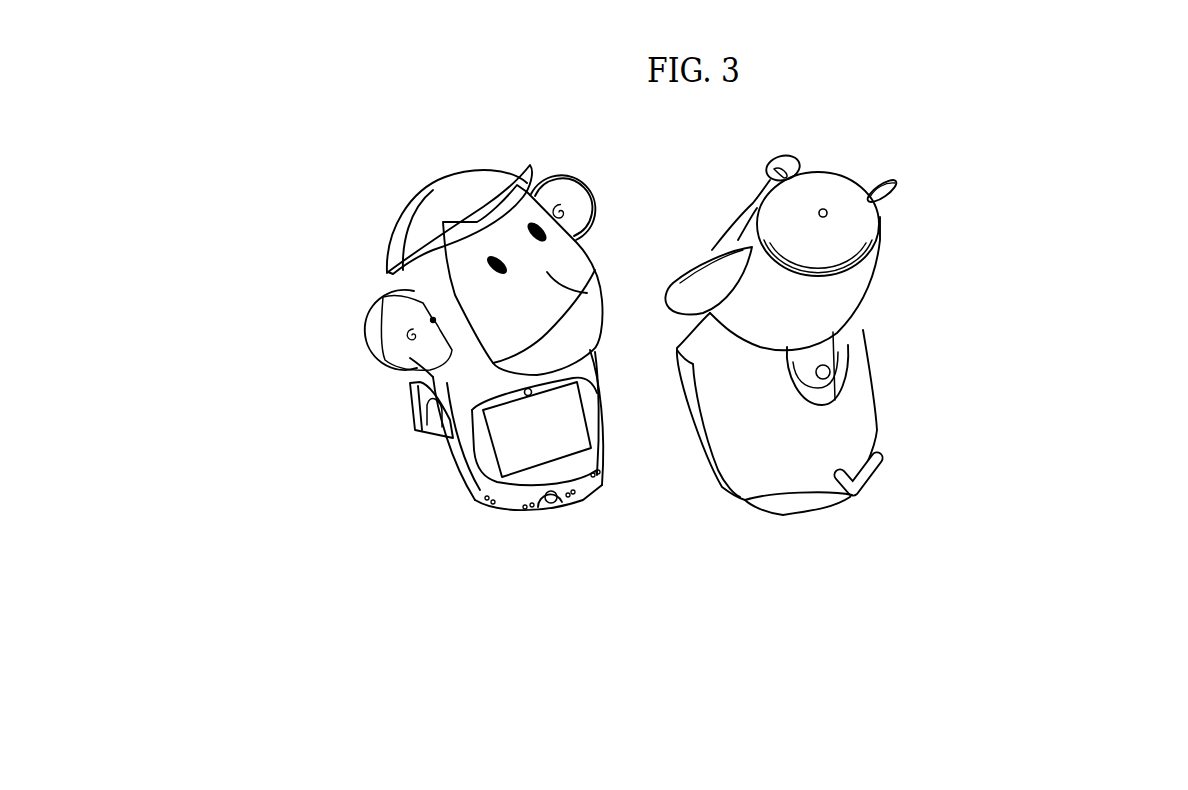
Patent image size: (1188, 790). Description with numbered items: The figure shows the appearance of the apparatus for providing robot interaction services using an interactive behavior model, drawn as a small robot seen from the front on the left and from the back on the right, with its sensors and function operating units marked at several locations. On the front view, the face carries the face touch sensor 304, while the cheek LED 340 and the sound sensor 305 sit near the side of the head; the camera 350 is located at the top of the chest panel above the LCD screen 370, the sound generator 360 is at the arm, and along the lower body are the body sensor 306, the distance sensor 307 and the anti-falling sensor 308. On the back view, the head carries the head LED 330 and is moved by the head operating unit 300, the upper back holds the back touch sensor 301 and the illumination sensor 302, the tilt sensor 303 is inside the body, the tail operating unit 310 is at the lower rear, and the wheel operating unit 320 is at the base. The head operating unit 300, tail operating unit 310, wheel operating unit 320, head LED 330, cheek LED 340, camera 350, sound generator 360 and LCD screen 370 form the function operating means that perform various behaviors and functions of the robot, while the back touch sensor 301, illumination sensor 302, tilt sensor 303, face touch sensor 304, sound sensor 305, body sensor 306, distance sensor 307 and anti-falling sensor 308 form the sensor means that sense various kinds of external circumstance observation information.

The face touch sensor 304 is at (527, 262).
The cheek LED 340 is at (522, 322).
The sound sensor 305 is at (425, 318).
The camera 350 is at (515, 388).
The sound generator 360 is at (425, 412).
The LCD screen 370 is at (523, 435).
The body sensor 306 is at (533, 495).
The distance sensor 307 is at (478, 503).
The anti-falling sensor 308 is at (513, 512).
The head LED 330 is at (838, 213).
The head operating unit 300 is at (838, 309).
The back touch sensor 301 is at (858, 353).
The illumination sensor 302 is at (836, 372).
The tilt sensor 303 is at (843, 413).
The tail operating unit 310 is at (880, 467).
The wheel operating unit 320 is at (823, 507).